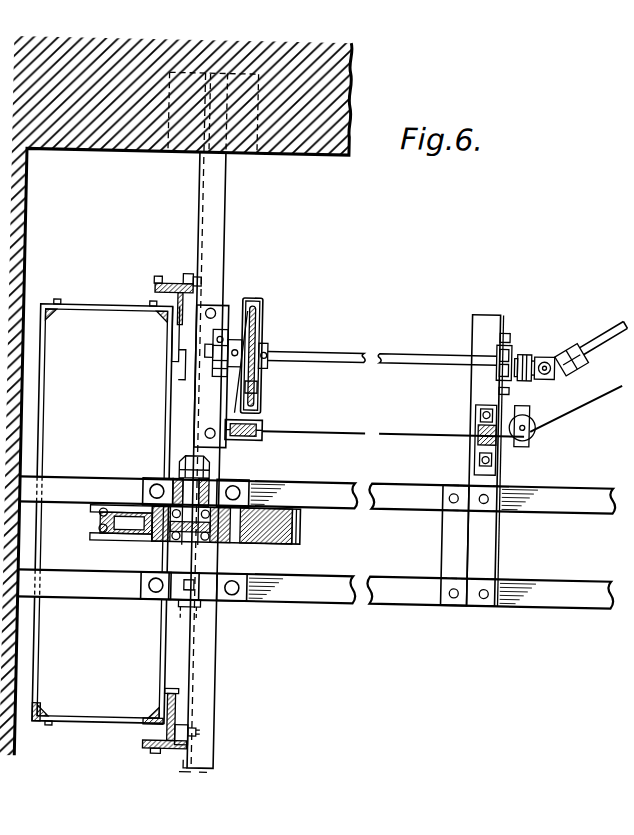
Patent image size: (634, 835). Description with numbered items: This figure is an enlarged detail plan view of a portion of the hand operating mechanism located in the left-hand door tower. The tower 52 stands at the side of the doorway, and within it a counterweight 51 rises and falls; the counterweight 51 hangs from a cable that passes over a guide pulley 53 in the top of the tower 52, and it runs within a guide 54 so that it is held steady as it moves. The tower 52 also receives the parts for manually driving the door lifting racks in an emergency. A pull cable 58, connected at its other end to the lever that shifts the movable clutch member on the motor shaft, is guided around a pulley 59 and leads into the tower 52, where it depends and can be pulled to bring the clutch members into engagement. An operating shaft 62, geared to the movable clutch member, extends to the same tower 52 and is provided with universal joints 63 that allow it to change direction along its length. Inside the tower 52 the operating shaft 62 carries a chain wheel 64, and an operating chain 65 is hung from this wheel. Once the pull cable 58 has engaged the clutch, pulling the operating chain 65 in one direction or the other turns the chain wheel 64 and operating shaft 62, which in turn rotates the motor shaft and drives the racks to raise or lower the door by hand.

The counterweight 51 is at (46, 670).
The tower 52 is at (315, 152).
The guide pulley 53 is at (129, 541).
The guide 54 is at (158, 289).
The pull cable 58 is at (360, 430).
The pulley 59 is at (251, 437).
The operating shaft 62 is at (364, 352).
The universal joint 63 is at (560, 342).
The chain wheel 64 is at (267, 327).
The operating chain 65 is at (263, 386).